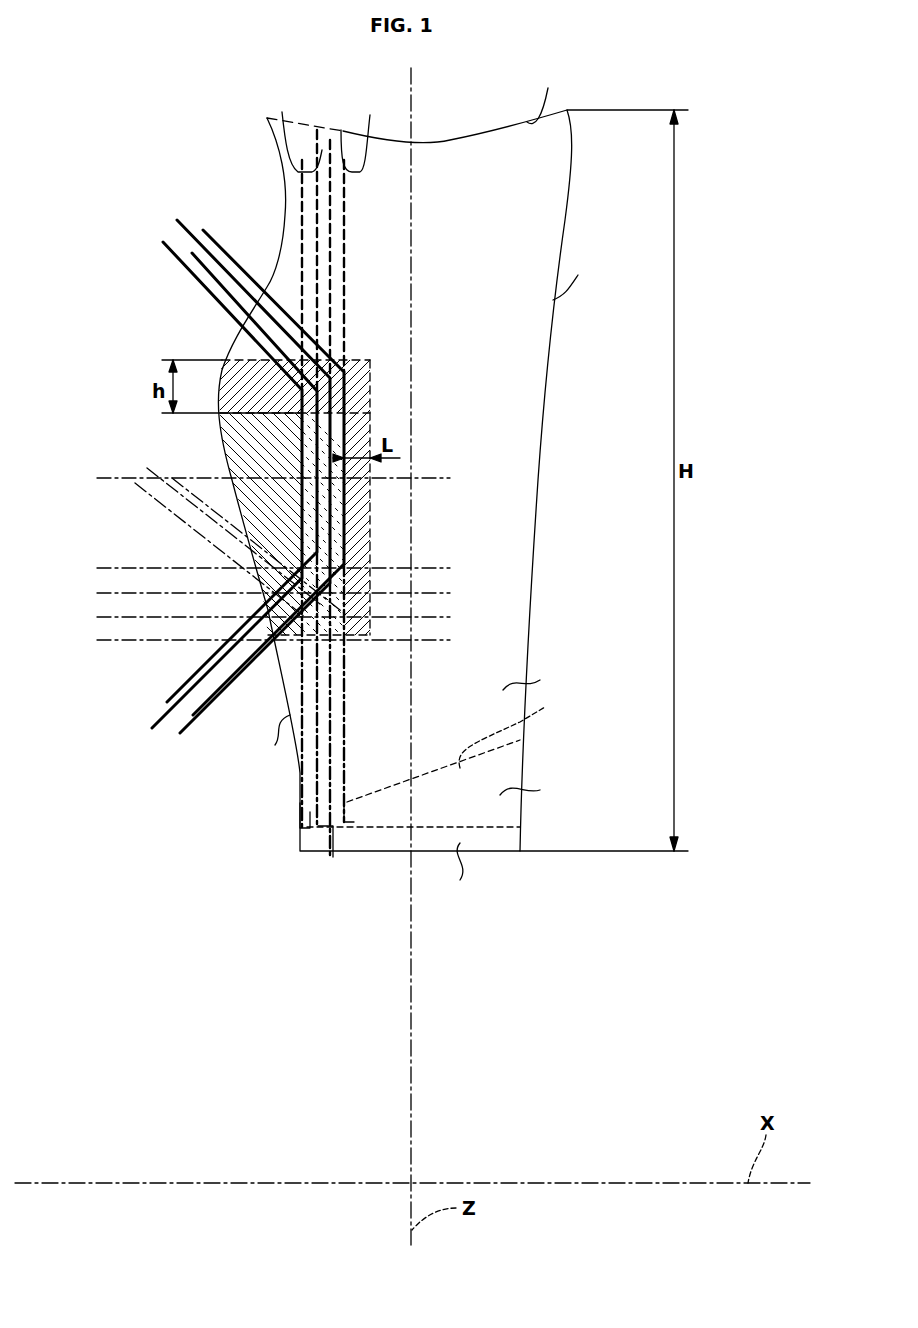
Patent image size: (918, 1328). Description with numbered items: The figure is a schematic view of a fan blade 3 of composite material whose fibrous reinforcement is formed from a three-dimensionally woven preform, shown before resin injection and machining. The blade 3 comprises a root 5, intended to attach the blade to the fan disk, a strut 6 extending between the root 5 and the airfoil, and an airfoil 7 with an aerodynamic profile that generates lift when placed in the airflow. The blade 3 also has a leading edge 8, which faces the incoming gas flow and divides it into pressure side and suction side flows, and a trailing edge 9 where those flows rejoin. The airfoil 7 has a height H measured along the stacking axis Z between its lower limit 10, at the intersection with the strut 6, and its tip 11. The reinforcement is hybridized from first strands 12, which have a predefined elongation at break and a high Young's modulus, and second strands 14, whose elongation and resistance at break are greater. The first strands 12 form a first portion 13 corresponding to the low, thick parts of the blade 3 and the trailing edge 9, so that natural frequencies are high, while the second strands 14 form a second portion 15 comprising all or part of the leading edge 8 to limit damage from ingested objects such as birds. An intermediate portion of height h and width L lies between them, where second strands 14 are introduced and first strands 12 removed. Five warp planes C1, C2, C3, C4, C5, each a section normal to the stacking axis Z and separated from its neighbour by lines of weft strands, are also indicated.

The blade 3 is at (726, 382).
The root 5 is at (453, 871).
The strut 6 is at (526, 780).
The airfoil 7 is at (528, 669).
The leading edge 8 is at (273, 740).
The trailing edge 9 is at (572, 276).
The lower limit 10 is at (459, 744).
The tip 11 is at (546, 93).
The first strands 12 is at (283, 118).
The first portion 13 is at (461, 519).
The second strands 14 is at (215, 262).
The second portion 15 is at (286, 519).
The warp plane C1 is at (98, 640).
The warp plane C2 is at (98, 617).
The warp plane C3 is at (98, 593).
The warp plane C4 is at (98, 568).
The warp plane C5 is at (98, 478).